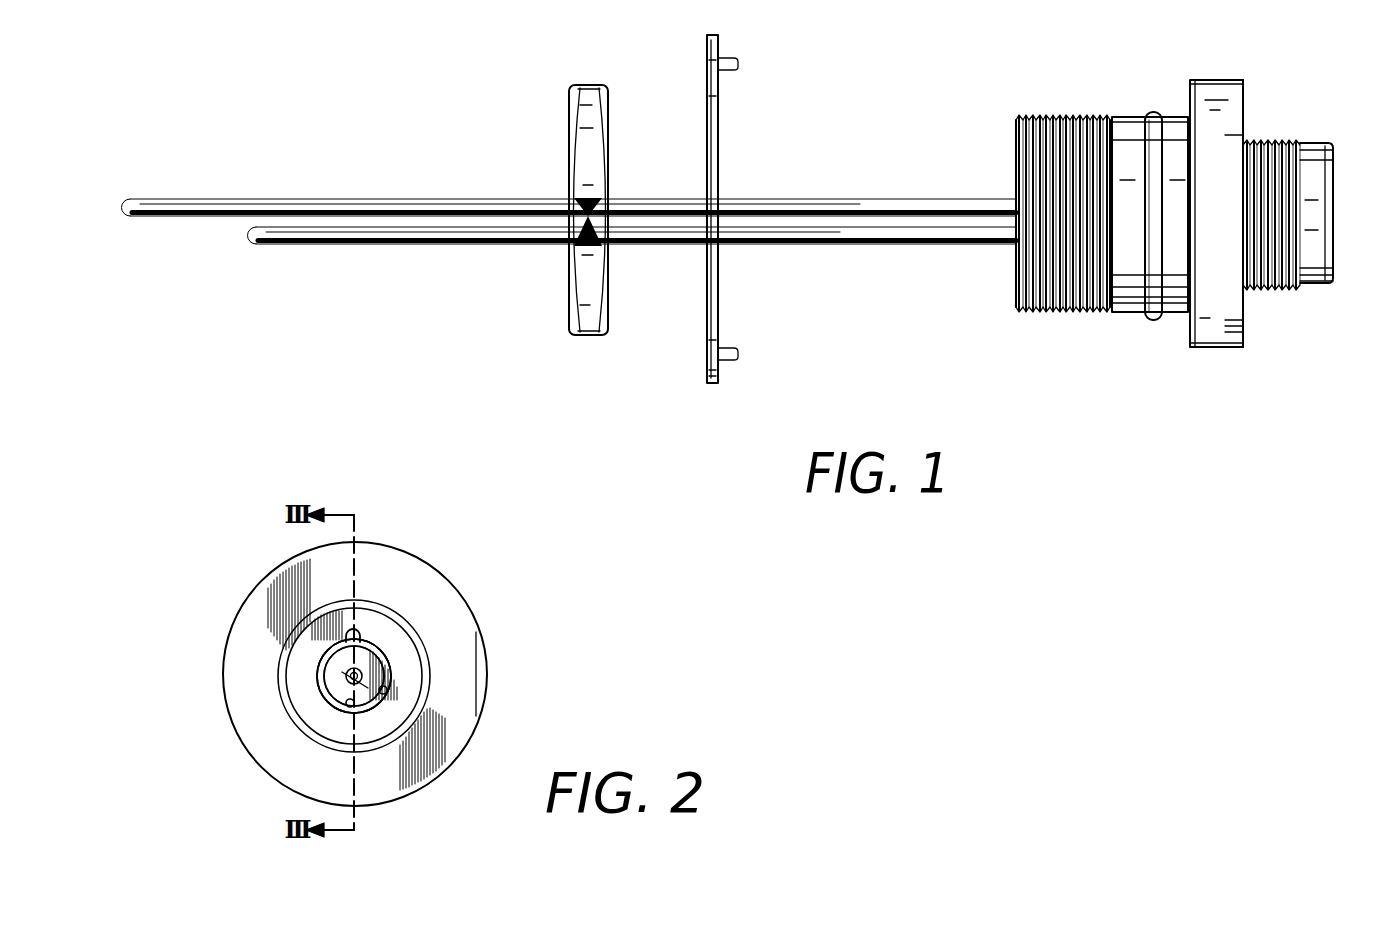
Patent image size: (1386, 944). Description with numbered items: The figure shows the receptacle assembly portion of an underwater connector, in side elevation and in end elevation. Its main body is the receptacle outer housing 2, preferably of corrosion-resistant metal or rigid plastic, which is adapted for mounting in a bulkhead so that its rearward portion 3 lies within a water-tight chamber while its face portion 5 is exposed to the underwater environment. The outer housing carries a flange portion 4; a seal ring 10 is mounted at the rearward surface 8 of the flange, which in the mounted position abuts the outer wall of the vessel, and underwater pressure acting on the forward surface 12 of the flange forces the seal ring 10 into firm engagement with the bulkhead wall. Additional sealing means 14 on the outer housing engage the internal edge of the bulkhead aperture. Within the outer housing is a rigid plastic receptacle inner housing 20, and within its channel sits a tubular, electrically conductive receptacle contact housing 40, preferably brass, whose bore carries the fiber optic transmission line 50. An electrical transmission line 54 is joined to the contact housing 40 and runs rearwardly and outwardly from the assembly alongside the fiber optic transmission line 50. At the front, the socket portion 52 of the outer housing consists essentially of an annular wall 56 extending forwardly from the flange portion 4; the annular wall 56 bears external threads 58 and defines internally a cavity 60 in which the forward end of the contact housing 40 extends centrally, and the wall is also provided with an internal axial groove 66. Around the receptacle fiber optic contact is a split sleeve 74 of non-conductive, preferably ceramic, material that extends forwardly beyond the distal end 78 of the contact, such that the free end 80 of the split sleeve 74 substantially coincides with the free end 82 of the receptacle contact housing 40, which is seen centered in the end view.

In FIG. 1, the receptacle outer housing 2 is at (1128, 116).
In FIG. 1, the rearward portion 3 is at (1116, 366).
In FIG. 1, the flange portion 4 is at (1217, 80).
In FIG. 1, the face portion 5 is at (1333, 253).
In FIG. 2, the face portion 5 is at (384, 636).
In FIG. 1, the rearward surface 8 is at (1189, 92).
In FIG. 1, the seal ring 10 is at (1186, 98).
In FIG. 1, the forward surface 12 is at (1243, 100).
In FIG. 2, the forward surface 12 is at (380, 557).
In FIG. 1, the additional sealing means 14 is at (1153, 111).
In FIG. 2, the receptacle inner housing 20 is at (370, 670).
In FIG. 2, the receptacle contact housing 40 is at (340, 677).
In FIG. 1, the fiber optic transmission line 50 is at (862, 199).
In FIG. 1, the socket portion 52 is at (1310, 282).
In FIG. 2, the socket portion 52 is at (388, 690).
In FIG. 1, the electrical transmission line 54 is at (845, 245).
In FIG. 1, the annular wall 56 is at (1310, 144).
In FIG. 2, the annular wall 56 is at (370, 715).
In FIG. 1, the external threads 58 is at (1268, 140).
In FIG. 2, the external threads 58 is at (328, 600).
In FIG. 2, the cavity 60 is at (348, 707).
In FIG. 2, the internal axial groove 66 is at (357, 632).
In FIG. 2, the split sleeve 74 is at (347, 700).
In FIG. 2, the distal end 78 is at (368, 672).
In FIG. 2, the free end 80 is at (290, 687).
In FIG. 2, the free end 82 is at (275, 668).